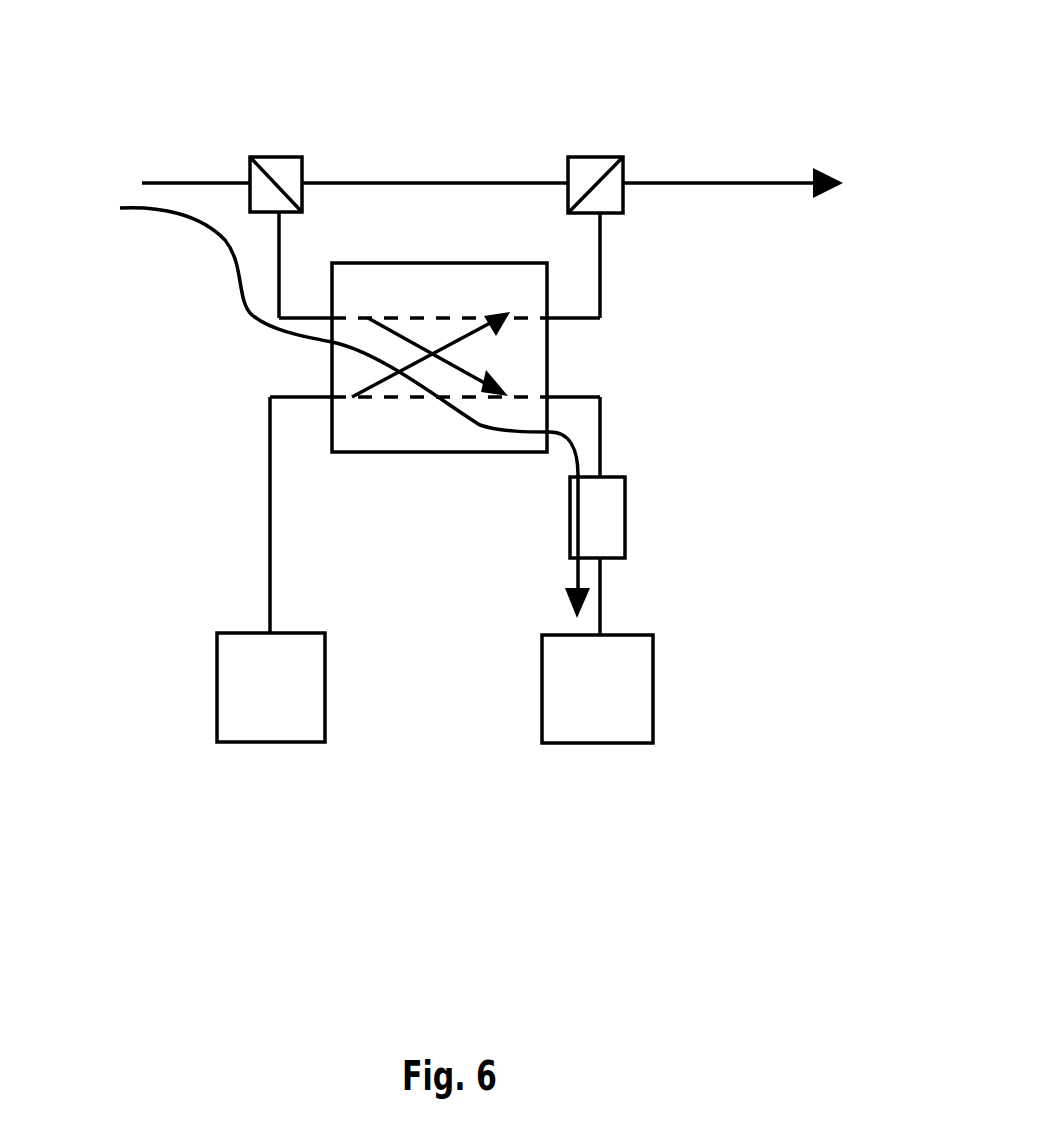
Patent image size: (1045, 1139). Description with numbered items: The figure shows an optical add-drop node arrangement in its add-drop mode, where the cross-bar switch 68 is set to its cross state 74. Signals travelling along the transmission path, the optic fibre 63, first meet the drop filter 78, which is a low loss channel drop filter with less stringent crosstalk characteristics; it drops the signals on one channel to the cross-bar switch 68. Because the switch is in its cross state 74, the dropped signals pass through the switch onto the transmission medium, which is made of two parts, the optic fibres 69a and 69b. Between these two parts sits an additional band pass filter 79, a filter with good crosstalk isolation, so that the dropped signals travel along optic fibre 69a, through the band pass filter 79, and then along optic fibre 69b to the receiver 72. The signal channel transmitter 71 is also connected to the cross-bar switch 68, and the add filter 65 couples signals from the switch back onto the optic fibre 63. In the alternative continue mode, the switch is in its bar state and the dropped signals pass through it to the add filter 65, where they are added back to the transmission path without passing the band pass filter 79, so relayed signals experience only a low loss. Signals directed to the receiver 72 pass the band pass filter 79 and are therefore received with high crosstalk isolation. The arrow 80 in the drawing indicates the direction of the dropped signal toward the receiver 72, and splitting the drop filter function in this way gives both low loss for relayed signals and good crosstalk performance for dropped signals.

The optic fibre 63 is at (710, 183).
The add filter 65 is at (598, 157).
The cross-bar switch 68 is at (330, 341).
The optic fibre 69a is at (600, 427).
The optic fibre 69b is at (600, 608).
The signal channel transmitter 71 is at (217, 683).
The receiver 72 is at (653, 687).
The cross state 74 is at (438, 345).
The drop filter 78 is at (250, 158).
The band pass filter 79 is at (625, 530).
The signal arrow 80 is at (568, 614).